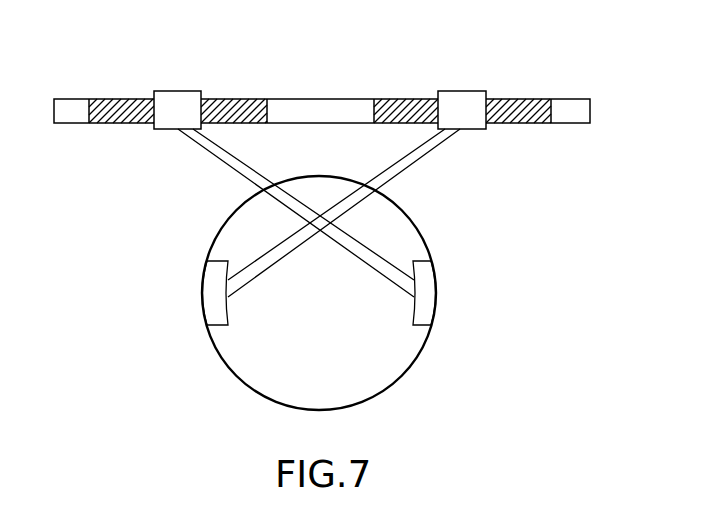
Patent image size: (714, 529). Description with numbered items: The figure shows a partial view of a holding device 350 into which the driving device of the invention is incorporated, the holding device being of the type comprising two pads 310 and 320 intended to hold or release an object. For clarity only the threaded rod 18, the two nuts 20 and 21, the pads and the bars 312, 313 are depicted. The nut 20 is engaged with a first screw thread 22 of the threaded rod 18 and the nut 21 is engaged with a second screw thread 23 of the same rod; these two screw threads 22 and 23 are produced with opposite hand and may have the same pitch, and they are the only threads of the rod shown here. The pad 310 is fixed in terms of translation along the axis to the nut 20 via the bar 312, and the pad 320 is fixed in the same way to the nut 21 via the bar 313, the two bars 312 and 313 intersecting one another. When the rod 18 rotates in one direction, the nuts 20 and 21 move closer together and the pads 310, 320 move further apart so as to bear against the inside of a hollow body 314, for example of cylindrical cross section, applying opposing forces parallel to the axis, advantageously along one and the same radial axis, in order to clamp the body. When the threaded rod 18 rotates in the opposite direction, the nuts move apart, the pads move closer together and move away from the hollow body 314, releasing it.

The threaded rod 18 is at (68, 125).
The nut 20 is at (175, 91).
The nut 21 is at (458, 91).
The first screw thread 22 is at (117, 98).
The second screw thread 23 is at (538, 98).
The pad 310 is at (427, 277).
The bar 312 is at (225, 164).
The bar 313 is at (410, 165).
The hollow body 314 is at (225, 366).
The pad 320 is at (212, 297).
The holding device 350 is at (96, 353).